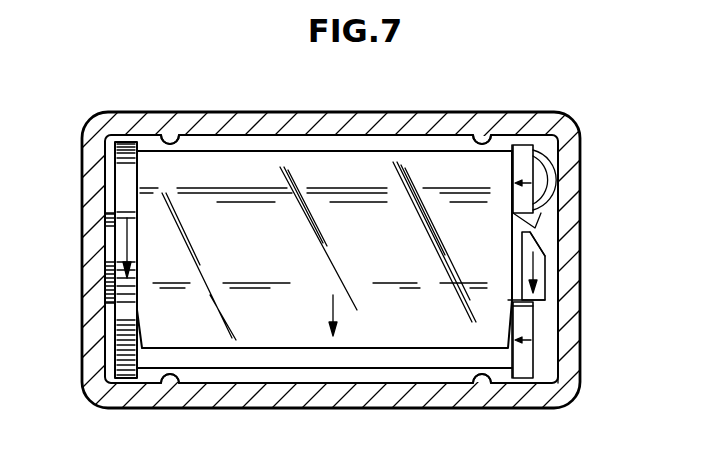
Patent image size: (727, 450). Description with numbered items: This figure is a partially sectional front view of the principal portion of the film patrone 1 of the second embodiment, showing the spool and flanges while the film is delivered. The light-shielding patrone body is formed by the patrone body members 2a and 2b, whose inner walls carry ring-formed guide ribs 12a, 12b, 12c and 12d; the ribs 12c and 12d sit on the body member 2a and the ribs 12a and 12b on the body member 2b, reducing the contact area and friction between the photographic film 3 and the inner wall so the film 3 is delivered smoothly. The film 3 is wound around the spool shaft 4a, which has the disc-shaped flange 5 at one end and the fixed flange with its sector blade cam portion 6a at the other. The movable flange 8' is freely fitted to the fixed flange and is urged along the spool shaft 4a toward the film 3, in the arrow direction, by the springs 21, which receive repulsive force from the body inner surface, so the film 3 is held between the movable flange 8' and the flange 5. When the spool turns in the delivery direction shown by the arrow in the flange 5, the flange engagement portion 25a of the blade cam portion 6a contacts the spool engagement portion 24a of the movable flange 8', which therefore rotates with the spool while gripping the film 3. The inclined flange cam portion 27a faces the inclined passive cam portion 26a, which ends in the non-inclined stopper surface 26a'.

The film patrone 1 is at (245, 88).
The patrone body member 2a is at (287, 125).
The patrone body member 2b is at (362, 396).
The photographic film 3 is at (345, 150).
The spool shaft 4a is at (108, 305).
The flange 5 is at (126, 141).
The blade cam portion 6a is at (547, 270).
The movable flange 8' is at (569, 224).
The guide rib 12a is at (172, 382).
The guide rib 12b is at (480, 380).
The guide rib 12c is at (173, 143).
The guide rib 12d is at (482, 146).
The spring 21 is at (559, 150).
The spool engagement portion 24a is at (545, 300).
The flange engagement portion 25a is at (540, 306).
The passive cam portion 26a is at (580, 213).
The stopper surface 26a' is at (592, 180).
The inclined flange cam portion 27a is at (540, 246).